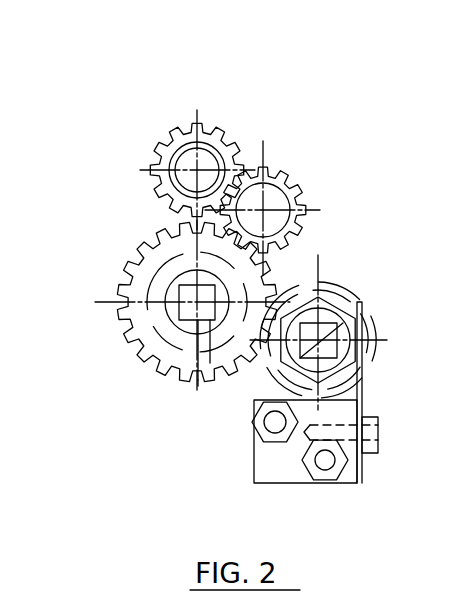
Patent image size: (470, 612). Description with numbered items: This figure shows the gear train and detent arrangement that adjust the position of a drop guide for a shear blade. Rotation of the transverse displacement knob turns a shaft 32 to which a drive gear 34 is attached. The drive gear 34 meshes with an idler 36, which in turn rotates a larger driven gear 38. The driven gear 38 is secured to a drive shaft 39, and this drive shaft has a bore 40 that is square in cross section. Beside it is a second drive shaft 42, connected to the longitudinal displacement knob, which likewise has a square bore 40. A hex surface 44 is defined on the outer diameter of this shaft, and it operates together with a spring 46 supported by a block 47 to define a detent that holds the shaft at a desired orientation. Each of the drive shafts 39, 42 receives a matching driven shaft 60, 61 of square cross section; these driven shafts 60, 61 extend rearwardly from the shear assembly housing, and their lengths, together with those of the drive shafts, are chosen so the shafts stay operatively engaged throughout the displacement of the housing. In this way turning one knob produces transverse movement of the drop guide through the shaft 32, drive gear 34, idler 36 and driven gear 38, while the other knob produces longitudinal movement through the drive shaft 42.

The shaft 32 is at (212, 158).
The drive gear 34 is at (173, 130).
The idler 36 is at (314, 205).
The driven gear 38 is at (122, 320).
The drive shaft 39 is at (143, 279).
The bore 40 is at (178, 335).
The drive shaft 42 is at (340, 378).
The hex surface 44 is at (334, 296).
The spring 46 is at (372, 371).
The block 47 is at (350, 476).
The driven shaft 60 is at (198, 382).
The driven shaft 61 is at (272, 365).